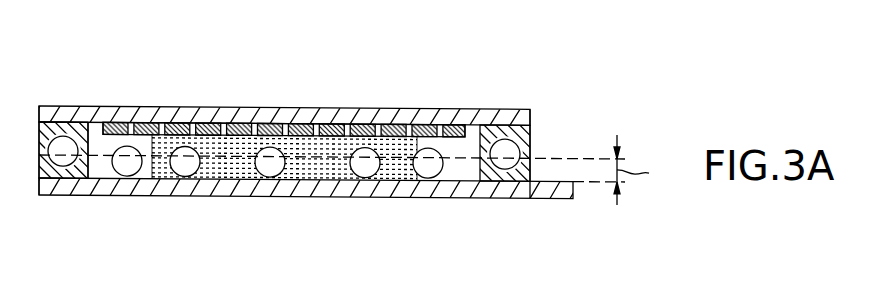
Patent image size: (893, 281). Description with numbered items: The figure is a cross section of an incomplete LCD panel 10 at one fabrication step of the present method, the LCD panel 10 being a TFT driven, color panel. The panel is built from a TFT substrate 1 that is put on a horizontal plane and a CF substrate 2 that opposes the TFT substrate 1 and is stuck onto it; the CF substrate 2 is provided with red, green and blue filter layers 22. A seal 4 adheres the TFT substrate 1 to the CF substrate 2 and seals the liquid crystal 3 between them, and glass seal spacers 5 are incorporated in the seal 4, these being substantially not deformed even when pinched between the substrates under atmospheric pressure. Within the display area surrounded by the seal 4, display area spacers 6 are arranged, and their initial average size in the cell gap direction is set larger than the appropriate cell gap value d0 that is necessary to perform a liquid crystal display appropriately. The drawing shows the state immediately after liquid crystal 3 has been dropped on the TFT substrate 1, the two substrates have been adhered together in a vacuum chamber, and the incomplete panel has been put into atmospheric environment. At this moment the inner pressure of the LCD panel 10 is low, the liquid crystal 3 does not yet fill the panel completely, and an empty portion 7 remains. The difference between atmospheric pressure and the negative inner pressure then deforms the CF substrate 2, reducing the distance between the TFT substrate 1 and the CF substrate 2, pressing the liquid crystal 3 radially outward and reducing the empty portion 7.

The LCD panel 10 is at (300, 82).
The TFT substrate 1 is at (331, 193).
The CF substrate 2 is at (345, 108).
The filter layers 22 is at (400, 108).
The liquid crystal 3 is at (228, 162).
The seal 4 is at (57, 106).
The seal spacers 5 is at (80, 106).
The display area spacers 6 is at (183, 172).
The empty portion 7 is at (468, 148).
The appropriate cell gap value d0 is at (621, 170).